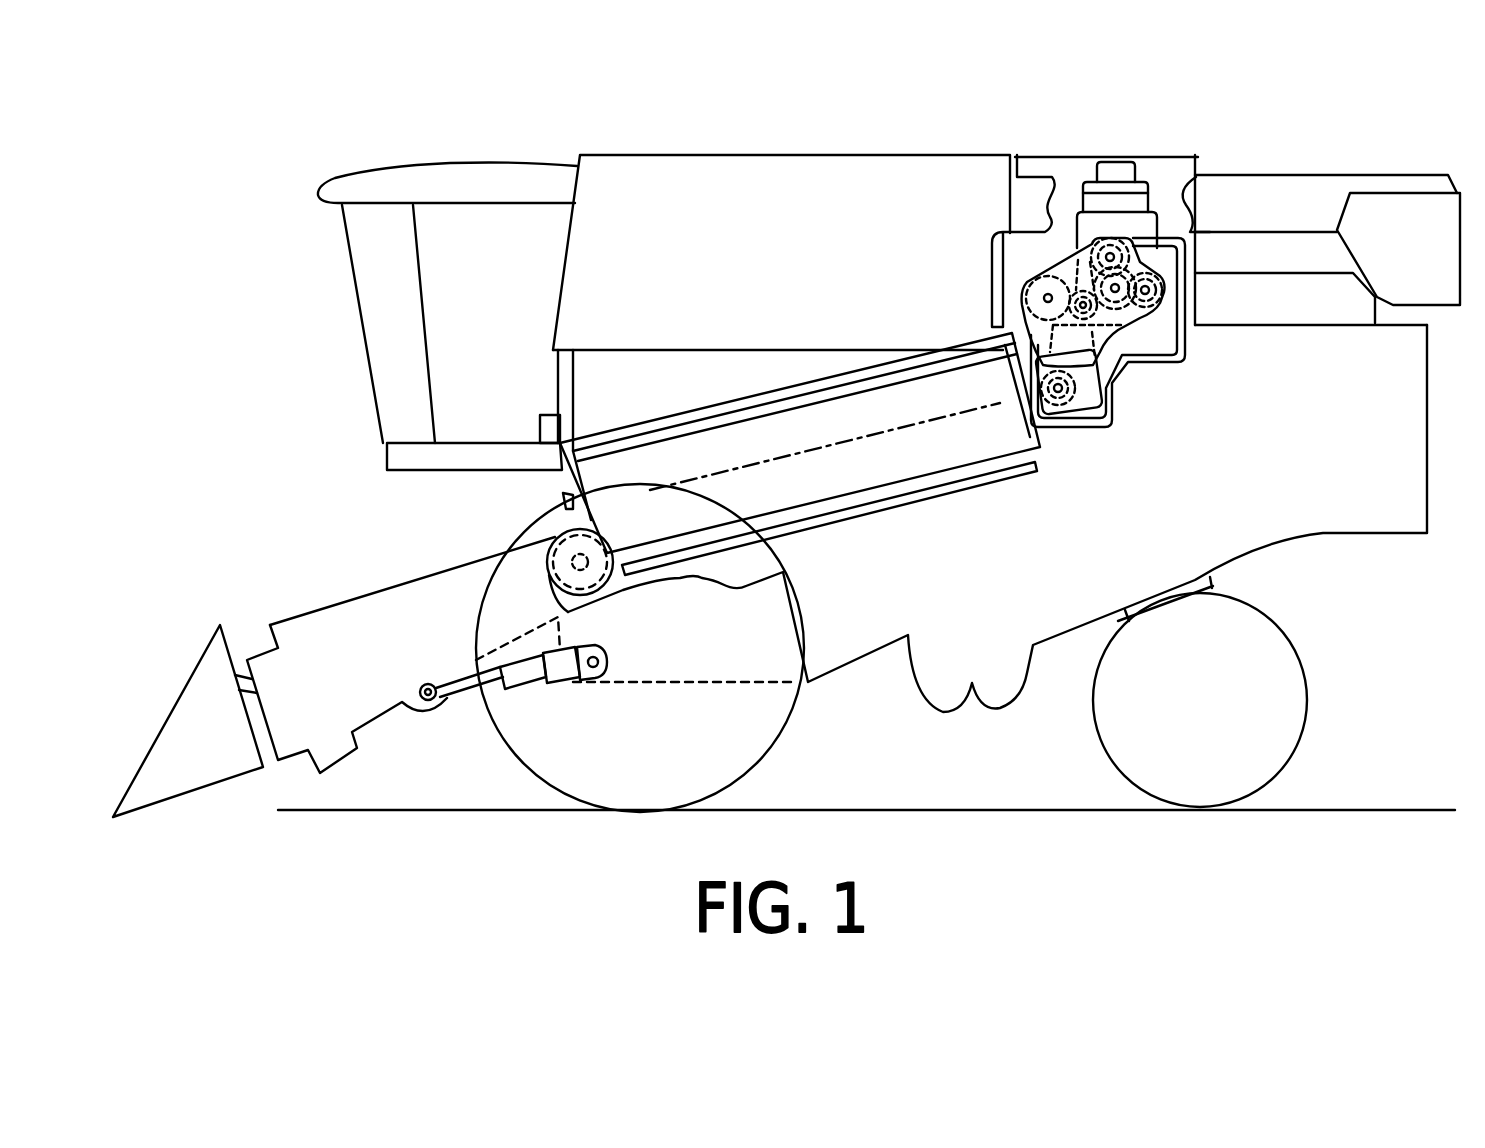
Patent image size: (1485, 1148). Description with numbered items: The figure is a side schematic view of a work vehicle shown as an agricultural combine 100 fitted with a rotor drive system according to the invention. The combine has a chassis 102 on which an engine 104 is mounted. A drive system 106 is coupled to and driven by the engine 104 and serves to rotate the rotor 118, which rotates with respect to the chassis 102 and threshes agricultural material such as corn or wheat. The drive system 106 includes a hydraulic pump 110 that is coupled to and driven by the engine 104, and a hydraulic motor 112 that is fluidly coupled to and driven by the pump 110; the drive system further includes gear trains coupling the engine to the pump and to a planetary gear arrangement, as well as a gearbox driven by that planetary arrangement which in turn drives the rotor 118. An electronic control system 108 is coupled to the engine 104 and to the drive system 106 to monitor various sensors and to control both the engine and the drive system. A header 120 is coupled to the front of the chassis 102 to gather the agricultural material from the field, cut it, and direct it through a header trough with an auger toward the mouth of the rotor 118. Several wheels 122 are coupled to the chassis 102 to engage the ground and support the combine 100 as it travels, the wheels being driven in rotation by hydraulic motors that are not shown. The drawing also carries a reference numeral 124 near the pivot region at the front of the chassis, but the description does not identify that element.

The agricultural combine 100 is at (813, 135).
The chassis 102 is at (888, 560).
The engine 104 is at (1118, 172).
The drive system 106 is at (1212, 385).
The electronic control system 108 is at (540, 423).
The hydraulic pump 110 is at (1128, 232).
The hydraulic motor 112 is at (1067, 427).
The rotor 118 is at (767, 407).
The header 120 is at (173, 700).
The wheels 122 is at (602, 737).
The feeder house pivot 124 is at (535, 538).